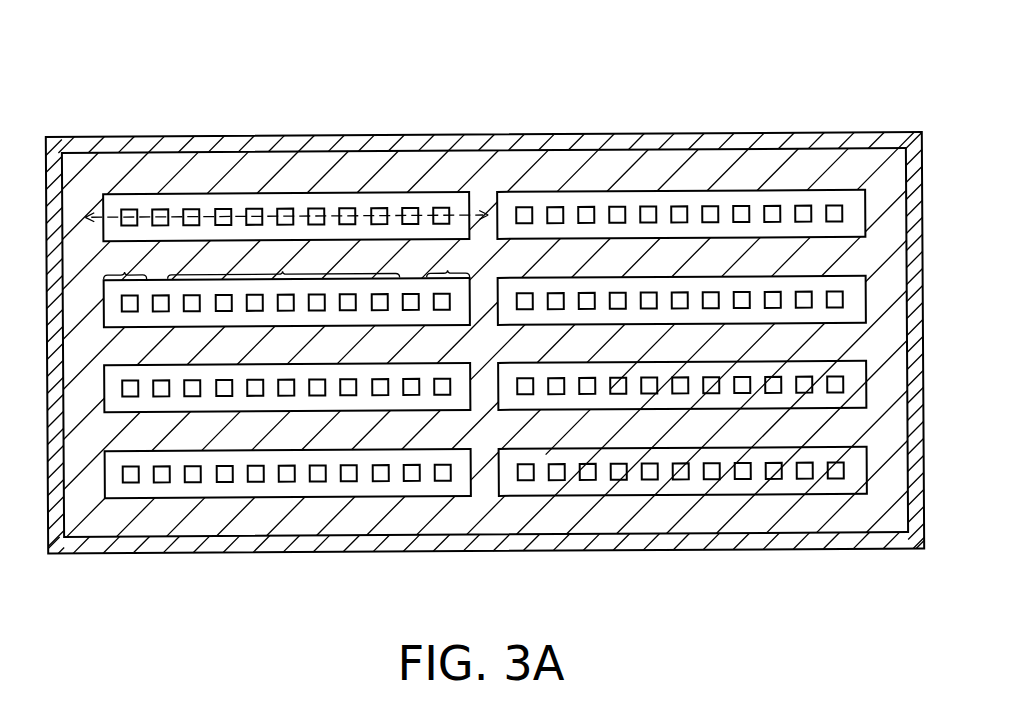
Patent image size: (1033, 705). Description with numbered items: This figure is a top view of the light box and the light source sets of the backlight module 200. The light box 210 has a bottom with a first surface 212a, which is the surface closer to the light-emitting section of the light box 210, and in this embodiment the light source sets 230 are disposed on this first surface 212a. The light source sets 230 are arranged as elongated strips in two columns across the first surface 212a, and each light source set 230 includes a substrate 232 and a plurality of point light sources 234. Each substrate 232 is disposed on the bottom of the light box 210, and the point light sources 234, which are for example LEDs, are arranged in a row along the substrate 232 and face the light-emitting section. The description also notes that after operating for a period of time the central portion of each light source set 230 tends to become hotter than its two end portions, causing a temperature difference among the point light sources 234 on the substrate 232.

The backlight module 200 is at (485, 335).
The light box 210 is at (771, 540).
The first surface 212a is at (756, 168).
The light source set 230 is at (285, 129).
The substrate 232 is at (247, 201).
The point light source 234 is at (195, 213).